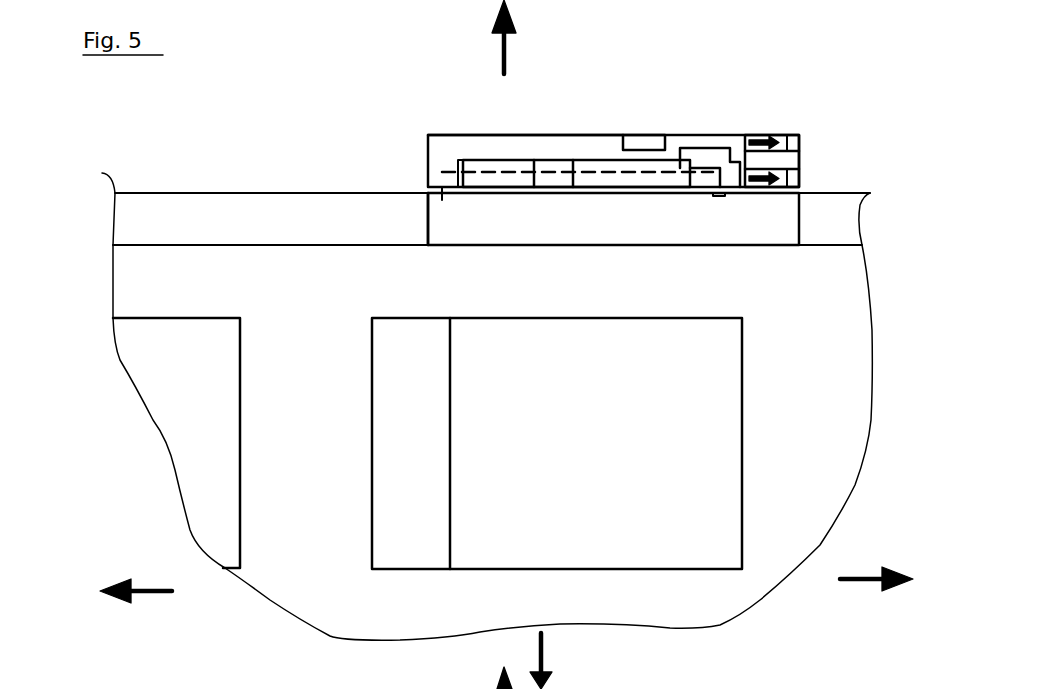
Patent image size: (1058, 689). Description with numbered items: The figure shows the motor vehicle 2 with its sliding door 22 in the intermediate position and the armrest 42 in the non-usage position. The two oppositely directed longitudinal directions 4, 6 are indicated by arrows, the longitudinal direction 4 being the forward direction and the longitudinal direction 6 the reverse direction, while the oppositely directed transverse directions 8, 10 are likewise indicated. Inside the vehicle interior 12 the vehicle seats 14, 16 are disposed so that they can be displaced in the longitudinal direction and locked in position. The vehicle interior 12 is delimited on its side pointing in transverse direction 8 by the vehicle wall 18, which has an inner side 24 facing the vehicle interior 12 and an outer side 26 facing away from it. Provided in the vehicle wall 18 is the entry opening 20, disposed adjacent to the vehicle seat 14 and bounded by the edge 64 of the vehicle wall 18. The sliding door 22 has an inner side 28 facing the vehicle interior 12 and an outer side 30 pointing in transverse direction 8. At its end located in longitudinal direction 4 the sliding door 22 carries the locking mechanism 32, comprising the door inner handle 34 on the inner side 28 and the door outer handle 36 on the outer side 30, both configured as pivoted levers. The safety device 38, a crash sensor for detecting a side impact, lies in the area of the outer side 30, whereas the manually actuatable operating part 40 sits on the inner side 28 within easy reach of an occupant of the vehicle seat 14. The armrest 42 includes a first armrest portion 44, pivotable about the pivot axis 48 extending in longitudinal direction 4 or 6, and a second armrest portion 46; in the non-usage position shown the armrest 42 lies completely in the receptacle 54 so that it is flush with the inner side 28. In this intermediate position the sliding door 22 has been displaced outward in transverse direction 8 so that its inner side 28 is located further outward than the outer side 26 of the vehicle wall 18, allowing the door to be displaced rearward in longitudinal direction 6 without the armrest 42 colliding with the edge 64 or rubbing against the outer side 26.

The motor vehicle 2 is at (822, 82).
The longitudinal direction 4 is at (857, 581).
The longitudinal direction 6 is at (148, 587).
The transverse direction 8 is at (498, 47).
The transverse direction 10 is at (546, 653).
The vehicle interior 12 is at (291, 460).
The vehicle seat 14 is at (718, 580).
The vehicle seat 16 is at (233, 588).
The vehicle wall 18 is at (222, 218).
The entry opening 20 is at (610, 218).
The sliding door 22 is at (467, 145).
The inner side 24 is at (302, 252).
The outer side 26 is at (257, 191).
The inner side 28 is at (442, 196).
The outer side 30 is at (571, 133).
The locking mechanism 32 is at (787, 160).
The door inner handle 34 is at (785, 186).
The door outer handle 36 is at (795, 137).
The safety device 38 is at (647, 140).
The operating part 40 is at (725, 195).
The armrest 42 is at (672, 197).
The first armrest portion 44 is at (603, 180).
The second armrest portion 46 is at (472, 166).
The pivot axis 48 is at (706, 172).
The receptacle 54 is at (496, 161).
The edge 64 is at (427, 237).